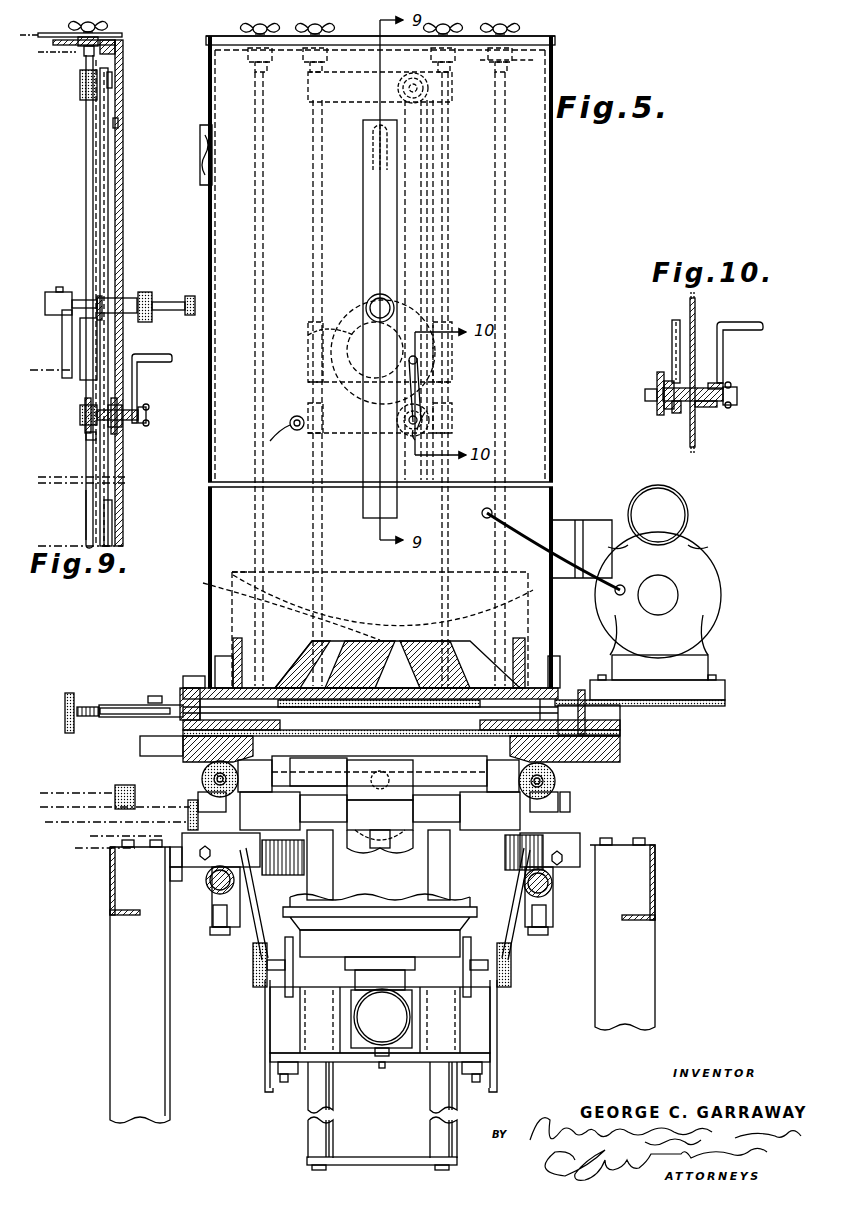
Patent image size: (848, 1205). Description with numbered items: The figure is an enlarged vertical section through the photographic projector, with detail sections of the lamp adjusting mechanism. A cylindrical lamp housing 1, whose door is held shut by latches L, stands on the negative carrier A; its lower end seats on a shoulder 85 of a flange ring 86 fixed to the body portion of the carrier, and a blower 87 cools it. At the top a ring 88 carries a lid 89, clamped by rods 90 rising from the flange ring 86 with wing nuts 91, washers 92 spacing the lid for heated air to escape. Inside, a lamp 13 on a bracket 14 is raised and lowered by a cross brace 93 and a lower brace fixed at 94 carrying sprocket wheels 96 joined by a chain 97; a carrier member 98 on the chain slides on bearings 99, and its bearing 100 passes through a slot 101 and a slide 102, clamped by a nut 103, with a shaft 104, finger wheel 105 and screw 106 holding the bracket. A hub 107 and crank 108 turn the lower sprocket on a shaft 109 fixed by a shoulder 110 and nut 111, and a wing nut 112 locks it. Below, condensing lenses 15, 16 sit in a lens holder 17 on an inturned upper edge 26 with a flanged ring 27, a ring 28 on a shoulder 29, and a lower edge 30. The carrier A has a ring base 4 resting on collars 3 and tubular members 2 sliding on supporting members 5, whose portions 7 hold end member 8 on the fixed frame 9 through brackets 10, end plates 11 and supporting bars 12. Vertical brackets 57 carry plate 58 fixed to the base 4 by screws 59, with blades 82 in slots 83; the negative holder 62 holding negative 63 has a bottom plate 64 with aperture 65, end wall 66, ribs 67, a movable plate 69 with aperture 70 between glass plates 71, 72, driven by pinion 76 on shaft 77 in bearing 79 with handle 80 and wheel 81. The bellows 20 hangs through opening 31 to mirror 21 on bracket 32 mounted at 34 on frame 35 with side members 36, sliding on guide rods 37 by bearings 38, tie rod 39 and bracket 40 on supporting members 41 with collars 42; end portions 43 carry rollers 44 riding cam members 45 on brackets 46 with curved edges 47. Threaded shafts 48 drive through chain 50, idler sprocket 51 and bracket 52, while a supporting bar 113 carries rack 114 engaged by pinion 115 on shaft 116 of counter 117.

In FIG. 9, the lamp housing 1 is at (112, 522).
In FIG. 10, the lamp housing 1 is at (690, 311).
In FIG. 5, the lamp housing 1 is at (548, 306).
In FIG. 5, the short tubular member 2 is at (194, 782).
In FIG. 5, the collars 3 is at (188, 752).
In FIG. 5, the ring base 4 is at (588, 740).
In FIG. 5, the tubular supporting member 5 is at (188, 798).
In FIG. 5, the transversely extending portions 7 is at (592, 830).
In FIG. 5, the end member 8 is at (460, 814).
In FIG. 5, the fixed frame 9 is at (110, 860).
In FIG. 5, the supporting brackets 10 is at (172, 854).
In FIG. 5, the end plates 11 is at (176, 874).
In FIG. 5, the supporting bar 12 is at (214, 916).
In FIG. 9, the electric lamp 13 is at (56, 372).
In FIG. 5, the electric lamp 13 is at (332, 352).
In FIG. 9, the lamp bracket 14 is at (62, 336).
In FIG. 5, the lamp bracket 14 is at (346, 320).
In FIG. 5, the upper condensing lens 15 is at (344, 580).
In FIG. 5, the lower condensing lens 16 is at (364, 642).
In FIG. 5, the lens holder 17 is at (548, 658).
In FIG. 5, the extensible bellows 20 is at (370, 920).
In FIG. 5, the image projecting prism or mirror 21 is at (378, 1032).
In FIG. 5, the inturned upper edge 26 is at (236, 584).
In FIG. 5, the flanged ring 27 is at (232, 572).
In FIG. 5, the flanged ring 28 is at (222, 654).
In FIG. 5, the shoulder 29 is at (186, 690).
In FIG. 5, the inturned lower edge 30 is at (232, 666).
In FIG. 5, the opening 31 is at (284, 682).
In FIG. 5, the bracket 32 is at (473, 984).
In FIG. 5, the mounting 34 is at (404, 1060).
In FIG. 5, the frame 35 is at (290, 1002).
In FIG. 5, the side members 36 is at (266, 1062).
In FIG. 5, the guide rods 37 is at (308, 1136).
In FIG. 5, the bearings 38 is at (306, 1066).
In FIG. 5, the tie rod 39 is at (382, 1164).
In FIG. 5, the bracket 40 is at (395, 782).
In FIG. 5, the supporting members 41 is at (380, 808).
In FIG. 5, the collars 42 is at (486, 830).
In FIG. 5, the end portions 43 is at (402, 865).
In FIG. 5, the rollers 44 is at (381, 853).
In FIG. 5, the cam members 45 is at (250, 956).
In FIG. 5, the brackets 46 is at (214, 934).
In FIG. 5, the curved upper edges 47 is at (208, 888).
In FIG. 5, the threaded shaft 48 is at (202, 778).
In FIG. 5, the sprocket chain 50 is at (382, 800).
In FIG. 5, the idler sprocket wheel 51 is at (386, 846).
In FIG. 5, the bracket 52 is at (370, 844).
In FIG. 5, the brackets 57 is at (146, 700).
In FIG. 5, the plate 58 is at (182, 732).
In FIG. 5, the screws 59 is at (182, 742).
In FIG. 5, the negative holder 62 is at (452, 662).
In FIG. 5, the negative 63 is at (396, 664).
In FIG. 5, the bottom plate 64 is at (589, 720).
In FIG. 5, the aperture 65 is at (255, 776).
In FIG. 5, the end wall 66 is at (318, 772).
In FIG. 5, the ribs 67 is at (657, 687).
In FIG. 5, the movable plate 69 is at (640, 694).
In FIG. 5, the aperture 70 is at (298, 680).
In FIG. 5, the glass plate 71 is at (330, 692).
In FIG. 5, the upper glass plate 72 is at (348, 694).
In FIG. 5, the pinion 76 is at (182, 694).
In FIG. 5, the shaft 77 is at (98, 704).
In FIG. 5, the bearing 79 is at (161, 748).
In FIG. 5, the handle 80 is at (76, 702).
In FIG. 5, the finger-engaging wheel 81 is at (66, 690).
In FIG. 5, the adjustable blades 82 is at (466, 676).
In FIG. 5, the slots 83 is at (416, 690).
In FIG. 5, the shoulder 85 is at (196, 676).
In FIG. 5, the flange ring 86 is at (582, 692).
In FIG. 5, the air blower 87 is at (708, 612).
In FIG. 9, the ring 88 is at (76, 52).
In FIG. 5, the ring 88 is at (535, 64).
In FIG. 9, the lid 89 is at (108, 36).
In FIG. 5, the lid 89 is at (552, 34).
In FIG. 9, the rods 90 is at (92, 208).
In FIG. 5, the rods 90 is at (264, 178).
In FIG. 9, the wing nuts 91 is at (98, 24).
In FIG. 5, the wing nuts 91 is at (246, 28).
In FIG. 5, the washers 92 is at (302, 46).
In FIG. 9, the cross brace 93 is at (80, 95).
In FIG. 5, the cross brace 93 is at (334, 96).
In FIG. 5, the mounting point 94 is at (310, 408).
In FIG. 9, the sprocket wheel 96 is at (112, 72).
In FIG. 5, the sprocket wheel 96 is at (424, 96).
In FIG. 9, the sprocket chain 97 is at (106, 180).
In FIG. 10, the sprocket chain 97 is at (672, 340).
In FIG. 5, the sprocket chain 97 is at (431, 198).
In FIG. 9, the carrier member 98 is at (92, 296).
In FIG. 5, the carrier member 98 is at (318, 376).
In FIG. 9, the bearings 99 is at (84, 376).
In FIG. 5, the bearings 99 is at (308, 330).
In FIG. 9, the bearing 100 is at (120, 298).
In FIG. 9, the slot 101 is at (114, 136).
In FIG. 5, the slot 101 is at (375, 176).
In FIG. 9, the slot closing slide 102 is at (118, 122).
In FIG. 5, the slot closing slide 102 is at (363, 188).
In FIG. 9, the nut 103 is at (148, 320).
In FIG. 5, the nut 103 is at (374, 278).
In FIG. 9, the shaft 104 is at (166, 310).
In FIG. 9, the finger-engaging wheel 105 is at (188, 296).
In FIG. 5, the finger-engaging wheel 105 is at (372, 290).
In FIG. 9, the screw 106 is at (52, 292).
In FIG. 9, the hub 107 is at (124, 428).
In FIG. 10, the hub 107 is at (702, 408).
In FIG. 9, the crank 108 is at (136, 370).
In FIG. 10, the crank 108 is at (723, 352).
In FIG. 5, the crank 108 is at (423, 366).
In FIG. 9, the shaft 109 is at (146, 414).
In FIG. 10, the shaft 109 is at (736, 388).
In FIG. 5, the shaft 109 is at (408, 426).
In FIG. 9, the shoulder 110 is at (90, 438).
In FIG. 10, the shoulder 110 is at (657, 382).
In FIG. 9, the nut 111 is at (80, 418).
In FIG. 10, the nut 111 is at (645, 398).
In FIG. 9, the wing nut 112 is at (126, 412).
In FIG. 10, the wing nut 112 is at (731, 402).
In FIG. 5, the wing nut 112 is at (412, 426).
In FIG. 5, the supporting bar 113 is at (150, 862).
In FIG. 5, the rack 114 is at (96, 846).
In FIG. 5, the pinion 115 is at (112, 827).
In FIG. 5, the shaft 116 is at (111, 809).
In FIG. 5, the counter 117 is at (83, 797).
In FIG. 5, the negative carrier A is at (570, 734).
In FIG. 5, the latches L is at (200, 176).